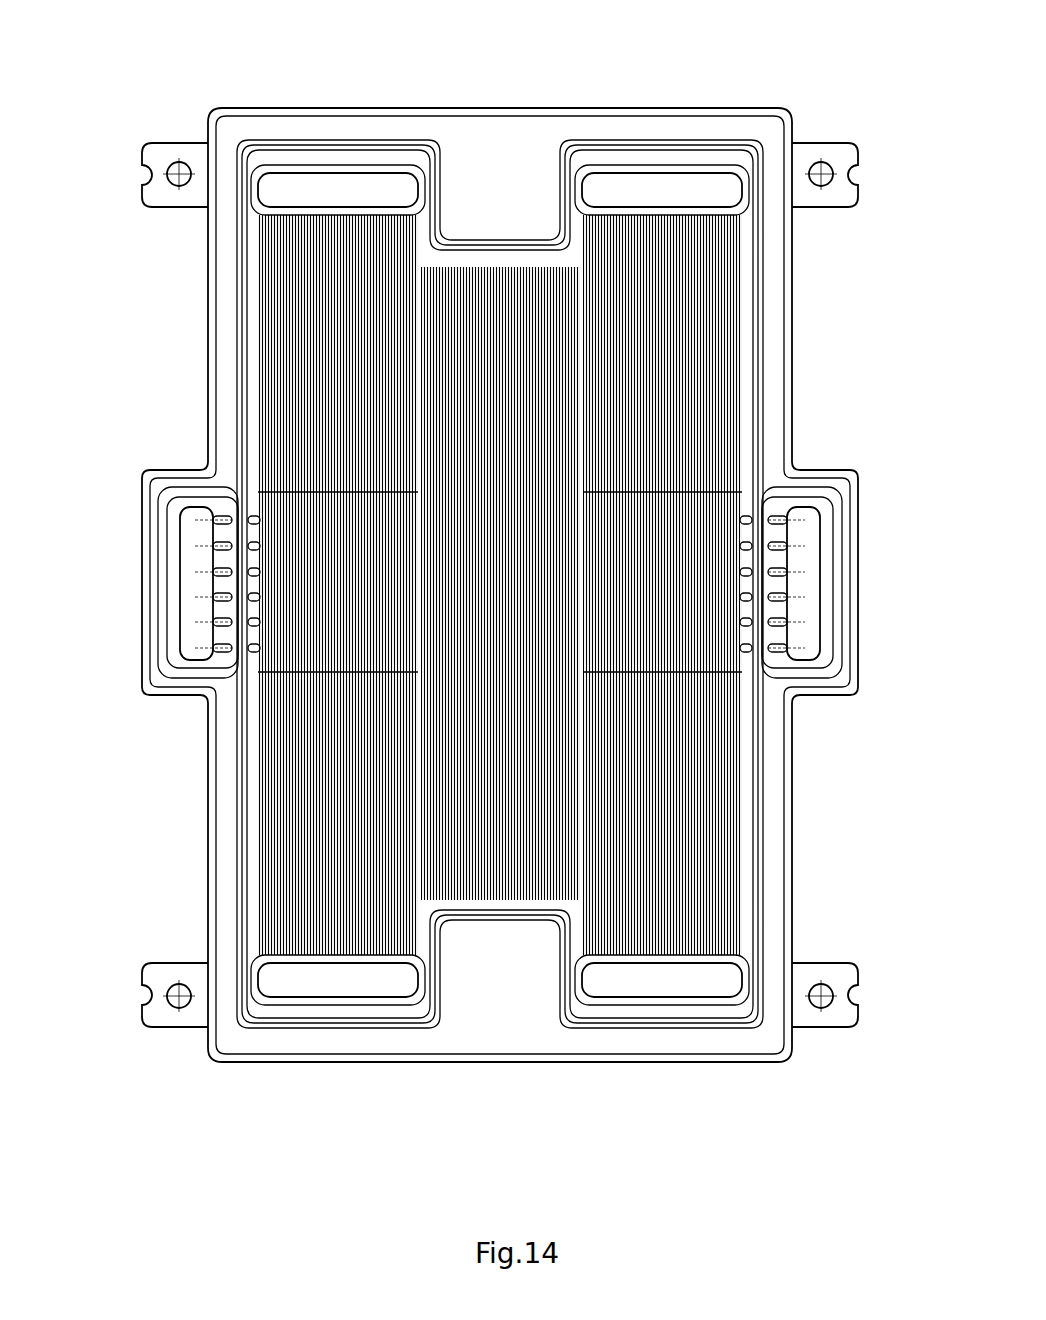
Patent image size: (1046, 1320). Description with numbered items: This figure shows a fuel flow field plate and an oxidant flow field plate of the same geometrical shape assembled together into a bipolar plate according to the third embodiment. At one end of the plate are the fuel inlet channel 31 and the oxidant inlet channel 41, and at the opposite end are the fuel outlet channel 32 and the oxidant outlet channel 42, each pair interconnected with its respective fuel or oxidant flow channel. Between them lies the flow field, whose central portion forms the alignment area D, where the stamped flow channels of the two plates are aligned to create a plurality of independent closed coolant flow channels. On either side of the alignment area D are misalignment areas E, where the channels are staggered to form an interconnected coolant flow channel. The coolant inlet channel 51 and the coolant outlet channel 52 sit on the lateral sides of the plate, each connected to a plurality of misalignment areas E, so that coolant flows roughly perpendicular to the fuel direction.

The fuel inlet channel 31 is at (664, 192).
The fuel outlet channel 32 is at (338, 975).
The oxidant inlet channel 41 is at (309, 192).
The oxidant outlet channel 42 is at (650, 978).
The coolant inlet channel 51 is at (195, 528).
The coolant outlet channel 52 is at (802, 553).
The alignment area D is at (488, 478).
The misalignment area E is at (690, 537).